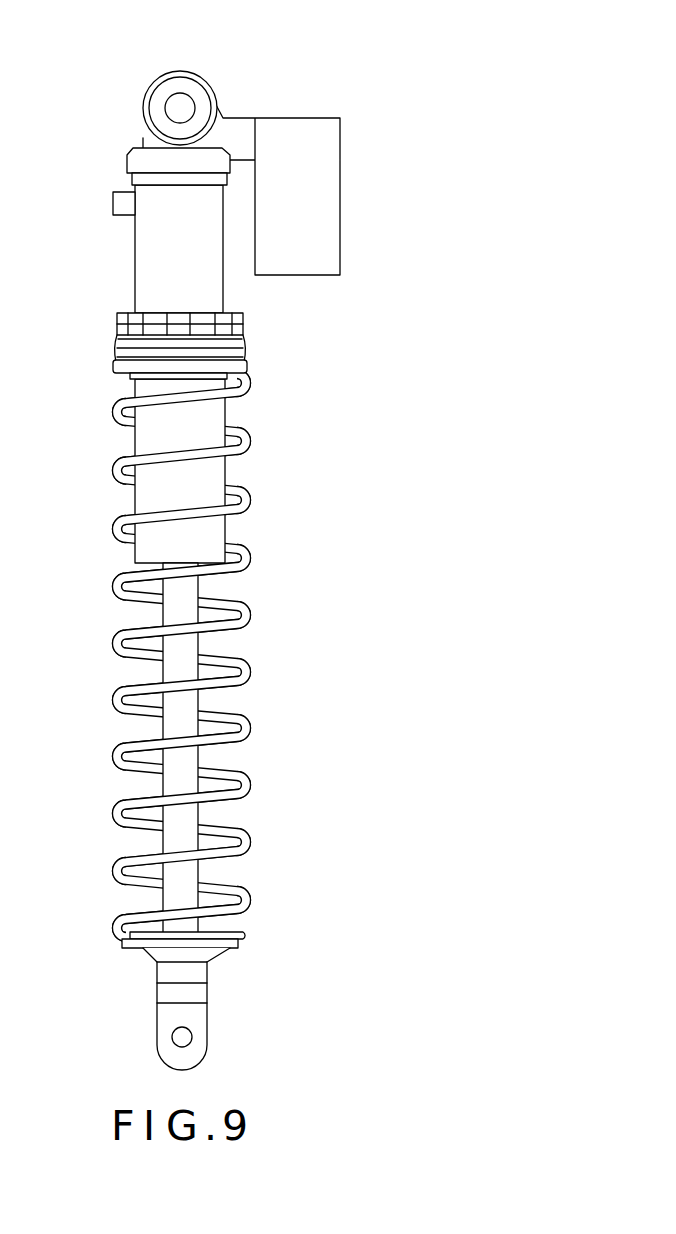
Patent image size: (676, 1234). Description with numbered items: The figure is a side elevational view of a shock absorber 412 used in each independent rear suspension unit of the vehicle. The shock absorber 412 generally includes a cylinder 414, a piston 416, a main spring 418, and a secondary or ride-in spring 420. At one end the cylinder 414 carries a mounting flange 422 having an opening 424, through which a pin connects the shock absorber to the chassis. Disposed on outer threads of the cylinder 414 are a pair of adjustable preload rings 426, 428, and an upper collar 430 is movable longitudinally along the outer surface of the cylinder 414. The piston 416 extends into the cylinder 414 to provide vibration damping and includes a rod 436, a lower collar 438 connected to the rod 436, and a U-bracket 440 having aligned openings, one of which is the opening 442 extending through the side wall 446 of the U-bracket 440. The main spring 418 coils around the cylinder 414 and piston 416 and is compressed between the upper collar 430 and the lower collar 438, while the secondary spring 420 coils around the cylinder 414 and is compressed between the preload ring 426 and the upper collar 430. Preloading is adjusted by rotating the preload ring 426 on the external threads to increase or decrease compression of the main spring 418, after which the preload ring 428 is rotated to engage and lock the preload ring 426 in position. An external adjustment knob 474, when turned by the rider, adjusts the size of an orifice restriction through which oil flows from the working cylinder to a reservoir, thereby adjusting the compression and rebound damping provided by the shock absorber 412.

The shock absorber 412 is at (433, 258).
The cylinder 414 is at (192, 430).
The piston 416 is at (179, 661).
The main spring 418 is at (242, 793).
The secondary spring 420 is at (246, 346).
The mounting flange 422 is at (233, 94).
The opening 424 is at (180, 97).
The preload ring 426 is at (118, 326).
The preload ring 428 is at (121, 314).
The upper collar 430 is at (117, 367).
The rod 436 is at (170, 714).
The lower collar 438 is at (232, 948).
The U-bracket 440 is at (215, 1031).
The opening 442 is at (176, 1039).
The side wall 446 is at (160, 1018).
The knob 474 is at (113, 201).